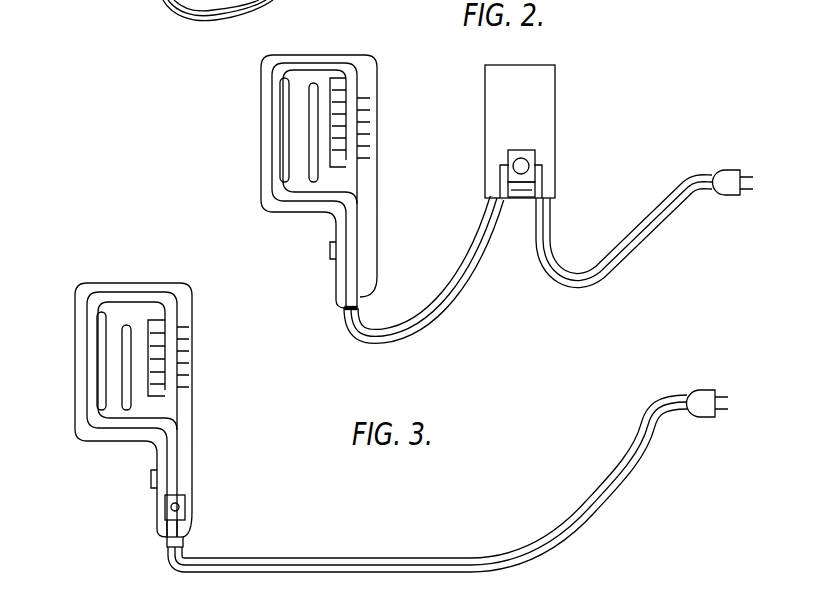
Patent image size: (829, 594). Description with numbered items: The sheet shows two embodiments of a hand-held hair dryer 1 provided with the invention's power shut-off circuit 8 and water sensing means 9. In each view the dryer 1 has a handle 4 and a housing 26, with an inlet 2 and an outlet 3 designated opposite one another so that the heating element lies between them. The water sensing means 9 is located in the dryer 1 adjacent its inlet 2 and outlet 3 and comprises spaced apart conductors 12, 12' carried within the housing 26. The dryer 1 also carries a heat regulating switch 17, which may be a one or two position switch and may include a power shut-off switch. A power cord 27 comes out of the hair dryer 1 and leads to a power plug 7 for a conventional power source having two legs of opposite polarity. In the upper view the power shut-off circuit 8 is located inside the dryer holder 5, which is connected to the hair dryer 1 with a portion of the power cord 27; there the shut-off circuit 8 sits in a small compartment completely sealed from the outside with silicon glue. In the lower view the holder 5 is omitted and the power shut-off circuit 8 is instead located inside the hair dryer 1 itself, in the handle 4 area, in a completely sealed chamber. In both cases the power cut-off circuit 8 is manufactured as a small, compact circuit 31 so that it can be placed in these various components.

In FIG. 2, the dryer 1 is at (319, 164).
In FIG. 3, the dryer 1 is at (131, 387).
In FIG. 2, the inlet 2 is at (377, 121).
In FIG. 3, the inlet 2 is at (193, 358).
In FIG. 2, the outlet 3 is at (262, 118).
In FIG. 3, the outlet 3 is at (75, 362).
In FIG. 2, the handle 4 is at (378, 193).
In FIG. 3, the handle 4 is at (195, 401).
In FIG. 2, the holder 5 is at (540, 111).
In FIG. 2, the plug 7 is at (748, 175).
In FIG. 3, the plug 7 is at (726, 390).
In FIG. 2, the power shut-off circuit 8 is at (537, 151).
In FIG. 3, the power shut-off circuit 8 is at (186, 508).
In FIG. 2, the water sensing means 9 is at (282, 100).
In FIG. 3, the water sensing means 9 is at (87, 318).
In FIG. 2, the conductor 12 is at (253, 130).
In FIG. 3, the conductor 12 is at (65, 369).
In FIG. 2, the conductor 12' is at (267, 140).
In FIG. 3, the conductor 12' is at (91, 399).
In FIG. 2, the heat regulating switch 17 is at (331, 247).
In FIG. 3, the heat regulating switch 17 is at (148, 479).
In FIG. 2, the housing 26 is at (322, 62).
In FIG. 3, the housing 26 is at (133, 291).
In FIG. 2, the power cord 27 is at (467, 290).
In FIG. 3, the power cord 27 is at (192, 557).
In FIG. 2, the compact circuit 31 is at (537, 157).
In FIG. 3, the compact circuit 31 is at (187, 492).